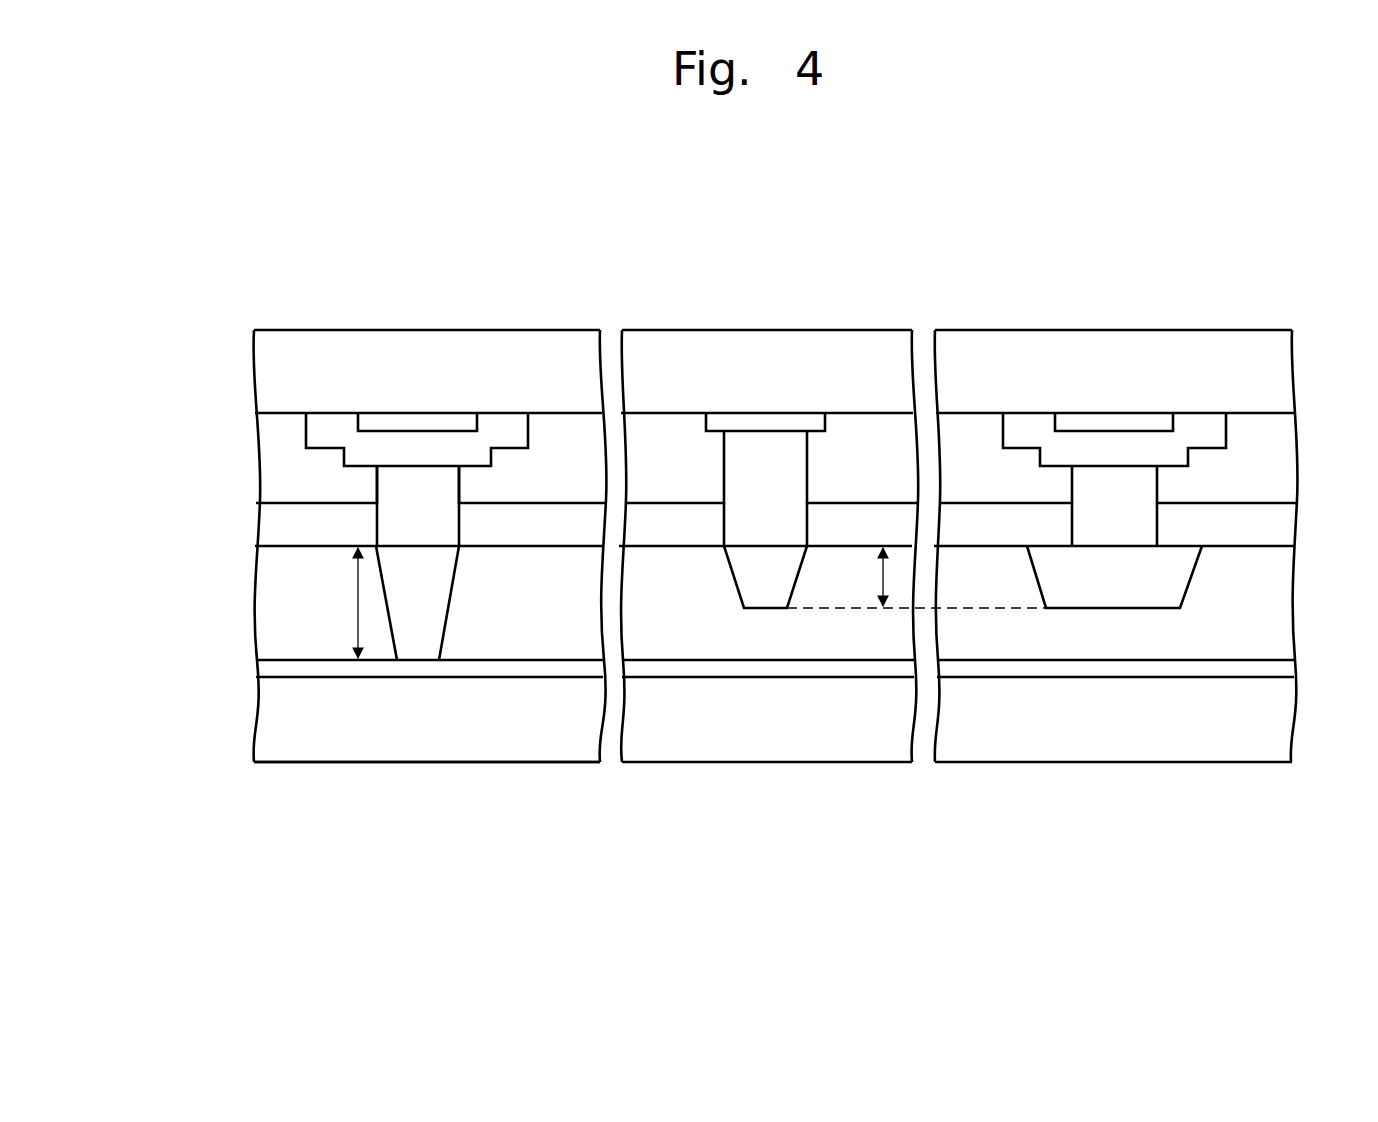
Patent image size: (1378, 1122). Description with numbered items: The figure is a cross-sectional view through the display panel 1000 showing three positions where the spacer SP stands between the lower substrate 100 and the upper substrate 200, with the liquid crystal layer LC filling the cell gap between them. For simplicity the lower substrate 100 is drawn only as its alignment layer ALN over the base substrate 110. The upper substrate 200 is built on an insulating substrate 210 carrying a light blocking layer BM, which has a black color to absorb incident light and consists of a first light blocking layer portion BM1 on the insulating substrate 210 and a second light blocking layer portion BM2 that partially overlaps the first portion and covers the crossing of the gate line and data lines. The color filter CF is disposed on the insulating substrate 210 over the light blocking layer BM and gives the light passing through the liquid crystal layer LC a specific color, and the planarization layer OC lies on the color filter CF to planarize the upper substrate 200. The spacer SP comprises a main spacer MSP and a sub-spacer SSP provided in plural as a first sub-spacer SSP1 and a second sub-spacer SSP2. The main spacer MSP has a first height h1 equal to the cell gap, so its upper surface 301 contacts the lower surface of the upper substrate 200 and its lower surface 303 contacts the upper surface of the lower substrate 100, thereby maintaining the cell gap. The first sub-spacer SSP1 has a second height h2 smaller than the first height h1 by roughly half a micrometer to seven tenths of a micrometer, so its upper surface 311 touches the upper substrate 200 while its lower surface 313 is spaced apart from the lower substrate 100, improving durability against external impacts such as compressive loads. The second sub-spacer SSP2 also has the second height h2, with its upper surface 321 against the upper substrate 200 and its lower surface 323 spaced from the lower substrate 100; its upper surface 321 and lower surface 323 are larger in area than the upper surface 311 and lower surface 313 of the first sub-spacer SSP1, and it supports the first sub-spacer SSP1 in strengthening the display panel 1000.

The display panel 1000 is at (1311, 238).
The upper substrate 200 is at (134, 362).
The insulating substrate 210 is at (262, 372).
The light blocking layer BM is at (178, 420).
The first light blocking layer portion BM1 is at (372, 422).
The second light blocking layer portion BM2 is at (316, 437).
The color filter CF is at (270, 487).
The planarization layer OC is at (265, 525).
The liquid crystal layer LC is at (265, 600).
The lower substrate 100 is at (166, 660).
The alignment layer ALN is at (263, 668).
The base substrate 110 is at (263, 720).
The spacer SP is at (960, 860).
The main spacer MSP is at (415, 637).
The upper surface of the main spacer 301 is at (436, 547).
The lower surface of the main spacer 303 is at (428, 660).
The sub-spacer SSP is at (1115, 812).
The first sub-spacer SSP1 is at (776, 590).
The upper surface of the first sub-spacer 311 is at (747, 546).
The lower surface of the first sub-spacer 313 is at (755, 608).
The second sub-spacer SSP2 is at (1083, 588).
The upper surface of the second sub-spacer 321 is at (1177, 546).
The lower surface of the second sub-spacer 323 is at (1165, 608).
The first height h1 is at (342, 603).
The second height h2 is at (916, 578).